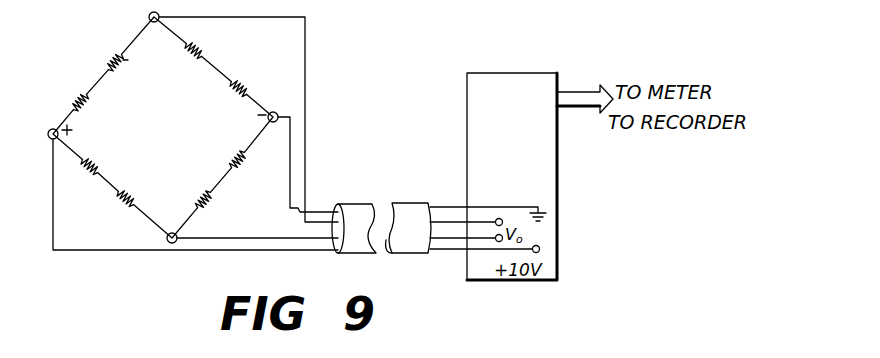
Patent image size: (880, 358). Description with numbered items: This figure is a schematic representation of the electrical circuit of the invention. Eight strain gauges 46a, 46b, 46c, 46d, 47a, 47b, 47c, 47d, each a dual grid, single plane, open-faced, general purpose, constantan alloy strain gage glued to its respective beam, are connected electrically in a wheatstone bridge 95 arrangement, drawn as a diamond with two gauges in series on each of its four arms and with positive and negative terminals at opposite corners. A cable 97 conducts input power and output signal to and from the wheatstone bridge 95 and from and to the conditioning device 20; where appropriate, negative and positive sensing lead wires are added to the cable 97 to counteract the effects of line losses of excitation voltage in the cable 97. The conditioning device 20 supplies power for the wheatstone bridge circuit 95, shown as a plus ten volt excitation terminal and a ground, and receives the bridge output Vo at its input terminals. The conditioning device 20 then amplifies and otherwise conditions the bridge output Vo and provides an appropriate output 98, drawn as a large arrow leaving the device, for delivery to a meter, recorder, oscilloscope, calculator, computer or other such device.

The wheatstone bridge 95 is at (141, 15).
The strain gauge 46a is at (78, 184).
The strain gauge 46b is at (63, 96).
The strain gauge 46c is at (97, 55).
The strain gauge 46d is at (113, 215).
The strain gauge 47a is at (213, 46).
The strain gauge 47b is at (219, 208).
The strain gauge 47c is at (252, 168).
The strain gauge 47d is at (255, 81).
The cable 97 is at (381, 264).
The conditioning device 20 is at (540, 158).
The output 98 is at (569, 92).